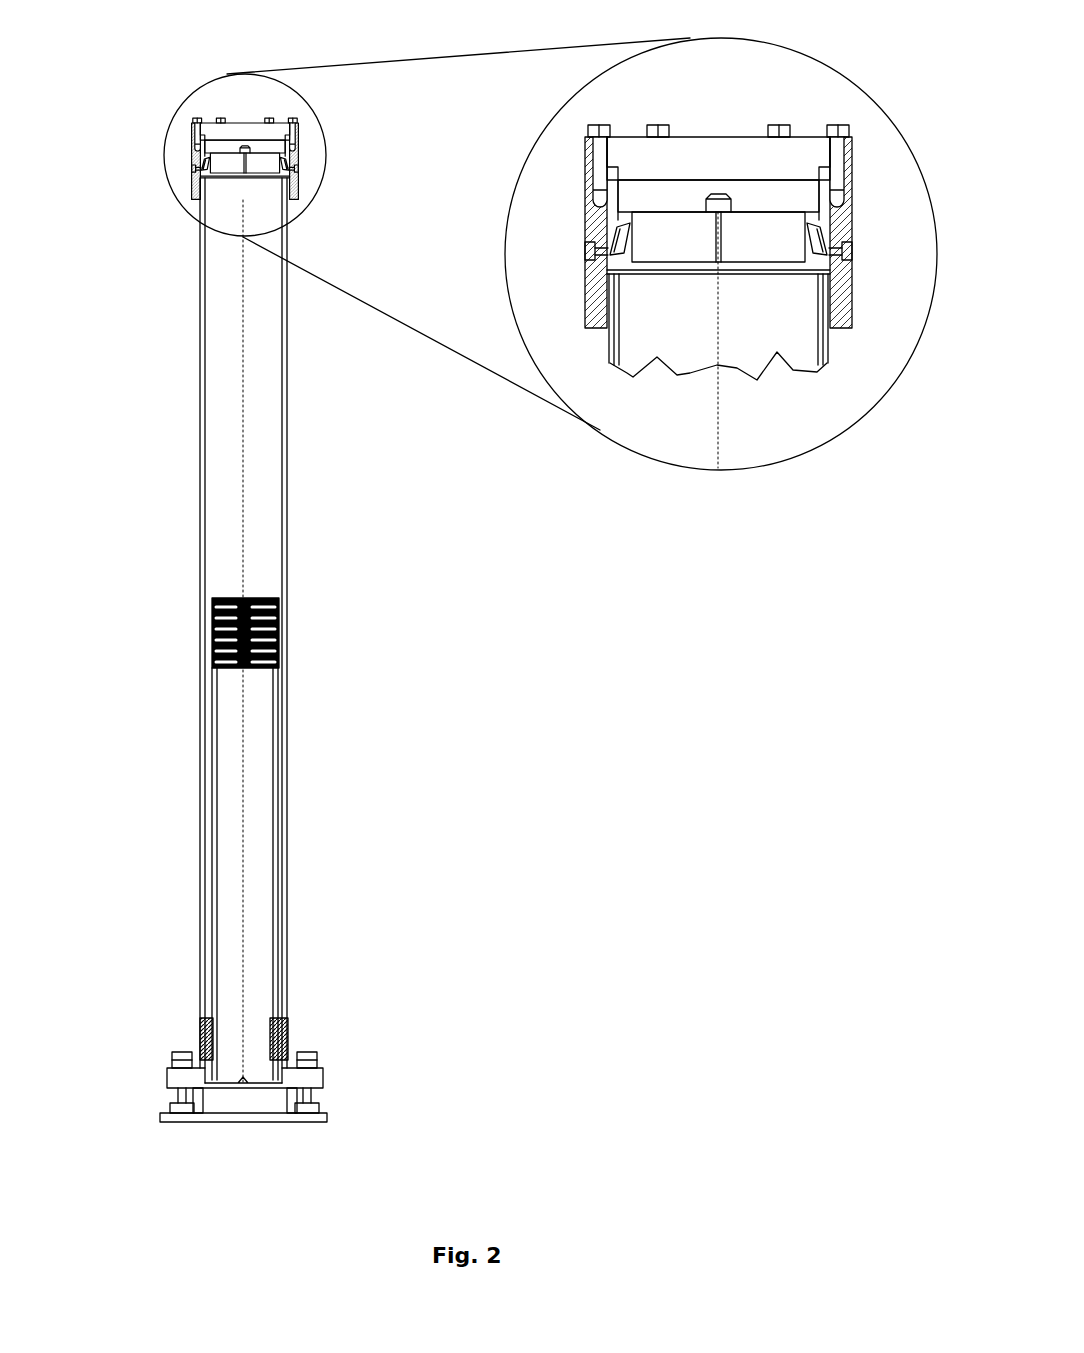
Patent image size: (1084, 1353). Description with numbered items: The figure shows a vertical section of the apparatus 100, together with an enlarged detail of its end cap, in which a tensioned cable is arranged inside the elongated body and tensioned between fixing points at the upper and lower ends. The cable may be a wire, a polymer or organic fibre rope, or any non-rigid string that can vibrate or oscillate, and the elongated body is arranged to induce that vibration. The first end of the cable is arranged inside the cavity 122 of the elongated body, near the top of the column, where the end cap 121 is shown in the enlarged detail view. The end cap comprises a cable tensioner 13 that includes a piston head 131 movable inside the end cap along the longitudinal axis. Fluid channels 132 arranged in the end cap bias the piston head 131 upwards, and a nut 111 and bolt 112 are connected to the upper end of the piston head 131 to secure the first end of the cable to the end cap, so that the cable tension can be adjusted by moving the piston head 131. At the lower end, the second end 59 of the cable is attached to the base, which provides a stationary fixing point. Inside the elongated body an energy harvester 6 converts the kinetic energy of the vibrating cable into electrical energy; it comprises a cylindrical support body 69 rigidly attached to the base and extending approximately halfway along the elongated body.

The apparatus 100 is at (344, 772).
The top cover 121 is at (159, 107).
The cavity 122 is at (230, 484).
The energy harvester 6 is at (307, 640).
The cylindrical support body 69 is at (273, 898).
The second end 59 is at (318, 1033).
The cable tensioner 13 is at (566, 237).
The piston head 131 is at (658, 220).
The fluid channels 132 is at (823, 240).
The nut 111 is at (731, 202).
The bolt 112 is at (723, 197).